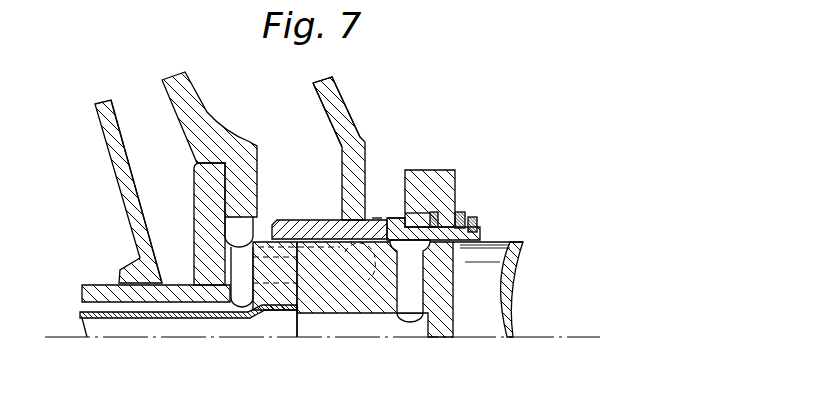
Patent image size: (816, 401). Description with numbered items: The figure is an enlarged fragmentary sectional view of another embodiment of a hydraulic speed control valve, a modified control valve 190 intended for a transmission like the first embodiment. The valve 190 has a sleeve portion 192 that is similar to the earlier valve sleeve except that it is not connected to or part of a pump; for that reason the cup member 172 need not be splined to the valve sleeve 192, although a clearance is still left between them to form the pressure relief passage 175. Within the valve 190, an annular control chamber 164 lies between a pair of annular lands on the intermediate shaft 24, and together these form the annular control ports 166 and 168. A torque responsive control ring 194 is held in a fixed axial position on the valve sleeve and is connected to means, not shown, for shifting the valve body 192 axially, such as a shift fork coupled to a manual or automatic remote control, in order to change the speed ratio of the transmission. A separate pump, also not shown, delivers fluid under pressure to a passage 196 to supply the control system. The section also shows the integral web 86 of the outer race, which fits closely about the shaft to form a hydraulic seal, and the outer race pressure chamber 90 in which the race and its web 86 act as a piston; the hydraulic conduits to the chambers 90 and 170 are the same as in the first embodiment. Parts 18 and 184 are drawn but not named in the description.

The bearing member 18 is at (192, 95).
The intermediate shaft 24 is at (495, 313).
The web 86 is at (108, 128).
The outer race pressure chamber 90 is at (152, 160).
The annular control chamber 164 is at (360, 237).
The annular control port 166 is at (392, 211).
The annular control port 168 is at (327, 218).
The chamber 170 is at (308, 138).
The cup member 172 is at (338, 98).
The pressure relief passage 175 is at (372, 218).
The thin plate 184 is at (247, 305).
The control valve 190 is at (400, 212).
The sleeve portion 192 is at (280, 220).
The torque responsive control ring 194 is at (412, 172).
The passage 196 is at (410, 303).